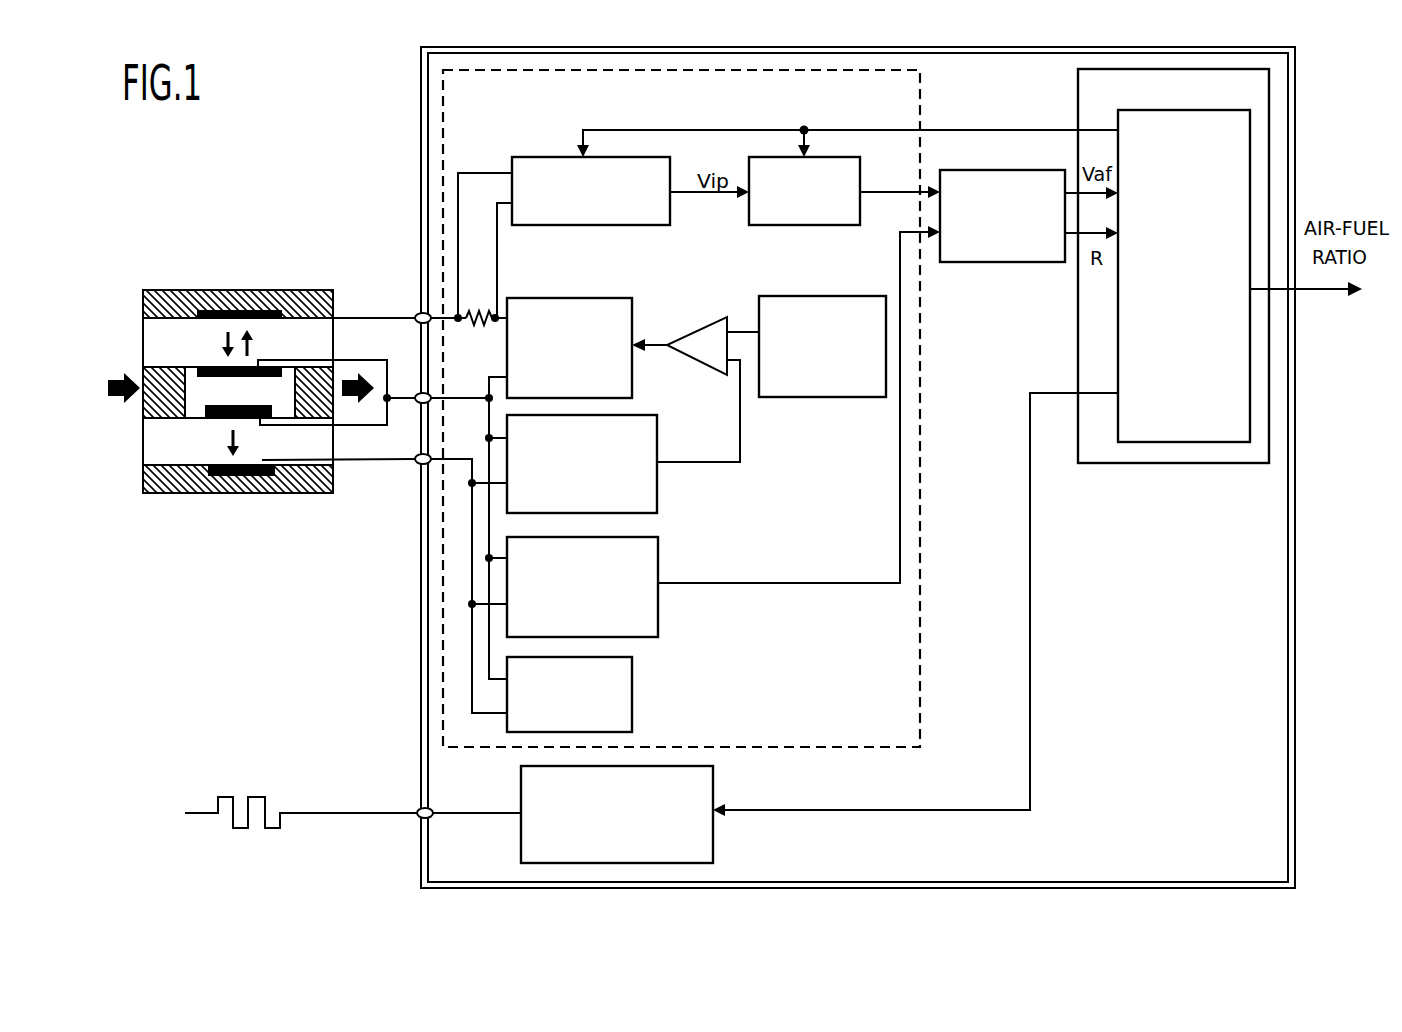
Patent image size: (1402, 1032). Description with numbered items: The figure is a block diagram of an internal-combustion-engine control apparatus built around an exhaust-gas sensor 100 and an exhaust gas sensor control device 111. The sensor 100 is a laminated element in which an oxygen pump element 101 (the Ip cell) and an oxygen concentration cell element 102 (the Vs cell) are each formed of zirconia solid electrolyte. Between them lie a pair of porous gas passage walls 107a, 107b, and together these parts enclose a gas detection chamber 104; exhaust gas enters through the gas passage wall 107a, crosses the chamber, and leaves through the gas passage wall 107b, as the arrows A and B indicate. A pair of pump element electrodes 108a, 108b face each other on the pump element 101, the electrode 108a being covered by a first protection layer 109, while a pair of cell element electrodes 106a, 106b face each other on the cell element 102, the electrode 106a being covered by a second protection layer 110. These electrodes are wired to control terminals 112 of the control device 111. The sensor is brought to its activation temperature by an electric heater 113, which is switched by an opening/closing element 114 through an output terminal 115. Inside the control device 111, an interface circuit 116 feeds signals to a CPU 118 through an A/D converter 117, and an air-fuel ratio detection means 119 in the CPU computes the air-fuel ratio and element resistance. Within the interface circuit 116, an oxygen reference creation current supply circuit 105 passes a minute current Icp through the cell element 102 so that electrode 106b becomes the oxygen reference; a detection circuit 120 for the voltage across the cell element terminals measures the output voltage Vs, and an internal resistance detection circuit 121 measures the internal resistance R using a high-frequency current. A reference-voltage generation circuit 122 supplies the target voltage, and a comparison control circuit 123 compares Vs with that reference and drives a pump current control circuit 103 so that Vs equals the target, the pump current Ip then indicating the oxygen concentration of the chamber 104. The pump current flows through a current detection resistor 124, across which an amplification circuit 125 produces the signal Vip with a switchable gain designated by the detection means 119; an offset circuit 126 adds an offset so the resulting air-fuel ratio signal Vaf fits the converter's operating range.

The exhaust-gas sensor 100 is at (322, 290).
The oxygen pump element 101 is at (142, 331).
The oxygen concentration cell element 102 is at (143, 432).
The pump current control circuit 103 is at (590, 298).
The gas detection chamber 104 is at (283, 400).
The oxygen reference creation current supply circuit 105 is at (632, 685).
The cell element electrode 106a is at (224, 418).
The cell element electrode 106b is at (237, 478).
The gas passage wall 107a is at (143, 378).
The gas passage wall 107b is at (326, 378).
The pump element electrode 108a is at (224, 309).
The pump element electrode 108b is at (284, 366).
The first protection layer 109 is at (142, 306).
The second protection layer 110 is at (142, 474).
The exhaust gas sensor control device 111 is at (420, 95).
The control terminals 112 is at (419, 312).
The electric heater 113 is at (258, 796).
The opening/closing element 114 is at (713, 835).
The output terminal 115 is at (418, 820).
The interface circuit 116 is at (921, 112).
The A/D converter 117 is at (968, 262).
The CPU 118 is at (1078, 83).
The air-fuel ratio detection means 119 is at (1153, 442).
The detection circuit for the voltage across the cell element terminals 120 is at (657, 490).
The internal resistance detection circuit 121 is at (658, 603).
The reference-voltage generation circuit 122 is at (847, 397).
The comparison control circuit 123 is at (727, 317).
The current detection resistor 124 is at (478, 305).
The amplification circuit 125 is at (577, 225).
The offset circuit 126 is at (778, 225).